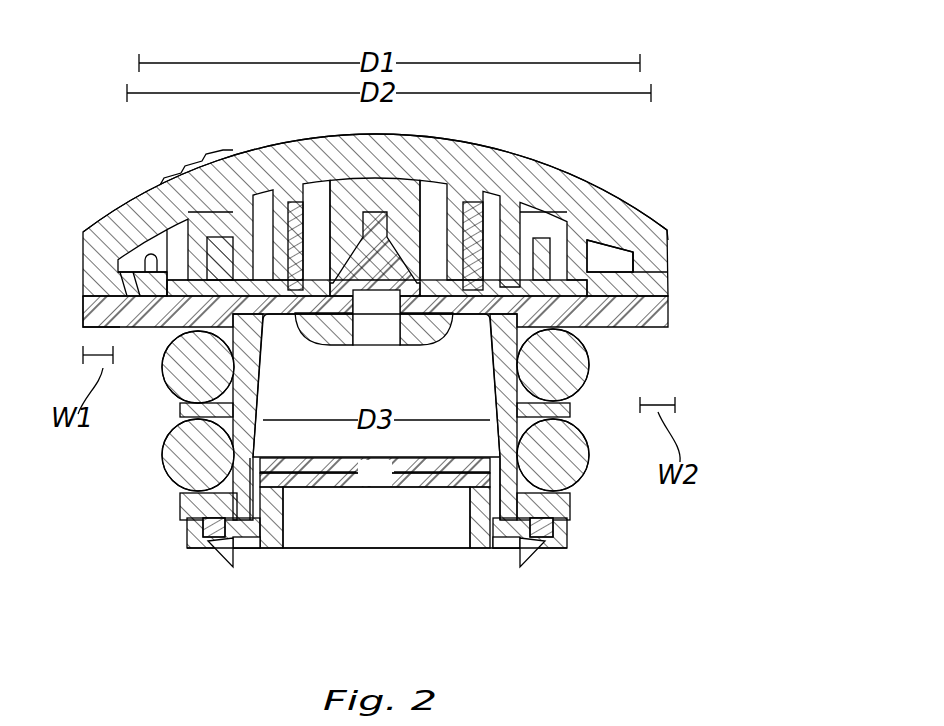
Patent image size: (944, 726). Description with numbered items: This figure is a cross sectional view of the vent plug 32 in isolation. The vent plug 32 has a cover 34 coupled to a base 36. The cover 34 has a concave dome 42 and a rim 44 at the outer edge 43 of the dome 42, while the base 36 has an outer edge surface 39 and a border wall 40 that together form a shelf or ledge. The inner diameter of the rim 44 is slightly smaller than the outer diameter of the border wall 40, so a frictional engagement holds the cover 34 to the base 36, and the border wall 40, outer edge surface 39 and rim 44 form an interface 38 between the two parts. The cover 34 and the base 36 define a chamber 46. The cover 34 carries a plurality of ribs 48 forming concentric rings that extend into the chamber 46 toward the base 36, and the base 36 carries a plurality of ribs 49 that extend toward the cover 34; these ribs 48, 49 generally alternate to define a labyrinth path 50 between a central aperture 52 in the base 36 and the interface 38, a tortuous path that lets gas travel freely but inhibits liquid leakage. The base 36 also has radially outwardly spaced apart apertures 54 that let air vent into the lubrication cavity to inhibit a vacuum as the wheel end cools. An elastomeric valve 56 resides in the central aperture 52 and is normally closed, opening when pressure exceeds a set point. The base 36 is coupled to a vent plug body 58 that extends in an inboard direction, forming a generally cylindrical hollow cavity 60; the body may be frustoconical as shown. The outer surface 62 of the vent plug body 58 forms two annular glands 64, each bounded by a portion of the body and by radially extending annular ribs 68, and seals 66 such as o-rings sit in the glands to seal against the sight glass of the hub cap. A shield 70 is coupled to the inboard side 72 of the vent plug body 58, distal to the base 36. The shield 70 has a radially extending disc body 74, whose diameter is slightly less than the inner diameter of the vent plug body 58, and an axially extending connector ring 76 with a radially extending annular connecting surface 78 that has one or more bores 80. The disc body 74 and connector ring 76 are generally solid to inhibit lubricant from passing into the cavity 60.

The vent plug 32 is at (775, 277).
The cover 34 is at (650, 230).
The base 36 is at (657, 327).
The interface 38 is at (670, 297).
The outer edge surface 39 is at (83, 312).
The border wall 40 is at (130, 280).
The concave dome 42 is at (553, 165).
The outer edge 43 is at (670, 230).
The rim 44 is at (653, 267).
The chamber 46 is at (600, 253).
The ribs 48 is at (178, 225).
The ribs 49 is at (212, 243).
The labyrinth path 50 is at (262, 213).
The central aperture 52 is at (405, 225).
The spaced apart apertures 54 is at (296, 287).
The valve 56 is at (361, 278).
The vent plug body 58 is at (572, 455).
The cavity 60 is at (361, 385).
The outer surface 62 is at (180, 500).
The annular glands 64 is at (604, 362).
The seals 66 is at (165, 368).
The annular ribs 68 is at (163, 440).
The shield 70 is at (400, 483).
The inboard side 72 is at (592, 582).
The disc body 74 is at (433, 483).
The connector ring 76 is at (283, 527).
The annular connecting surface 78 is at (243, 553).
The bores 80 is at (505, 548).